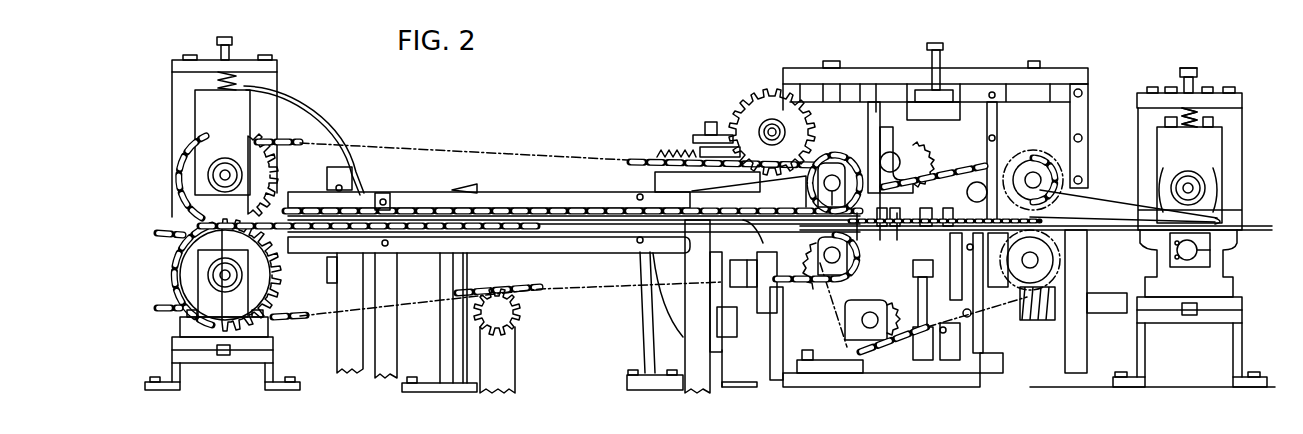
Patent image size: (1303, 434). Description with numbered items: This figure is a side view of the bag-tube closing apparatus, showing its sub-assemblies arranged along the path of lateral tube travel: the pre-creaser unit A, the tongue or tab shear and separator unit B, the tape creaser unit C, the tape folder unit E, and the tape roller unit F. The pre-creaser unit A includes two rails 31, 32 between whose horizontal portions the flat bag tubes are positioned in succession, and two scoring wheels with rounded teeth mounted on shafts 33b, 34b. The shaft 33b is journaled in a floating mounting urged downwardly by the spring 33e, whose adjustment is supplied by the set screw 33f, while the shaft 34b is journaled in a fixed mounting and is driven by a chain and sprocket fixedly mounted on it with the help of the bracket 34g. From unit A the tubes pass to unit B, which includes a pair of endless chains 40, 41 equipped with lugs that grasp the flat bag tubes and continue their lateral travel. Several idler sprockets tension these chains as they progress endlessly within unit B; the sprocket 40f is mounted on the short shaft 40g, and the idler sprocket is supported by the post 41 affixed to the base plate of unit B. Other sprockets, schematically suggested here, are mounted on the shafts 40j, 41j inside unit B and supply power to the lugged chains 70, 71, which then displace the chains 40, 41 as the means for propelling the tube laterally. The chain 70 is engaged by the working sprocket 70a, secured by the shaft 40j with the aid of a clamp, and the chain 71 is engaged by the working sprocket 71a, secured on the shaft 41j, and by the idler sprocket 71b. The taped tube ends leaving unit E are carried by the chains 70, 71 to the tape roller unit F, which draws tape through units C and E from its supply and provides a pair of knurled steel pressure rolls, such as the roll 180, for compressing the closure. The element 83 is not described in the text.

The tape roller unit F is at (280, 82).
The knurled steel pressure roll 180 is at (183, 148).
The tape folder unit E is at (456, 188).
The idler sprocket 71b is at (522, 312).
The tape creaser unit C is at (695, 135).
The serrated member 83 is at (672, 148).
The working sprocket 70a is at (772, 145).
The lugged chain 70 is at (823, 158).
The shaft 40j is at (832, 183).
The tongue or tab shear and separator unit B is at (1088, 104).
The short shaft 40g is at (877, 112).
The idler sprocket 40f is at (913, 152).
The endless chain 40 is at (925, 182).
The working sprocket 71a is at (850, 254).
The shaft 41j is at (870, 312).
The endless chain 41 is at (895, 350).
The lugged chain 71 is at (790, 297).
The rail 31 is at (1217, 219).
The rail 32 is at (1250, 229).
The pre-creaser unit A is at (1243, 142).
The set screw 33f is at (1197, 83).
The spring 33e is at (1197, 121).
The shaft 33b is at (1190, 188).
The bracket 34g is at (1210, 256).
The shaft 34b is at (1190, 259).